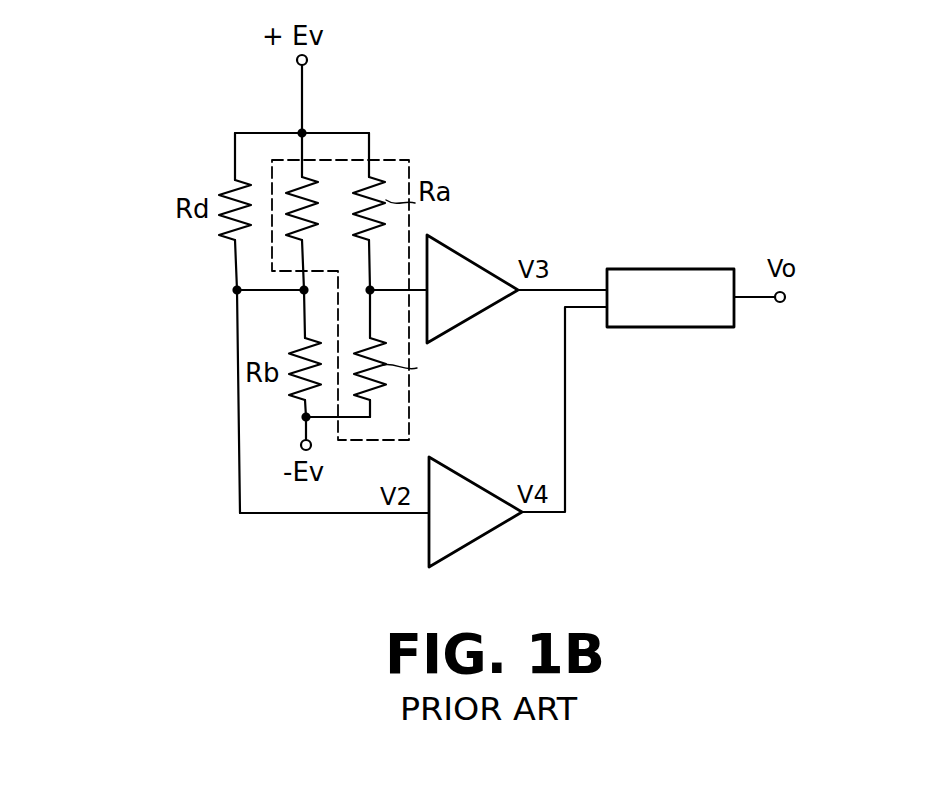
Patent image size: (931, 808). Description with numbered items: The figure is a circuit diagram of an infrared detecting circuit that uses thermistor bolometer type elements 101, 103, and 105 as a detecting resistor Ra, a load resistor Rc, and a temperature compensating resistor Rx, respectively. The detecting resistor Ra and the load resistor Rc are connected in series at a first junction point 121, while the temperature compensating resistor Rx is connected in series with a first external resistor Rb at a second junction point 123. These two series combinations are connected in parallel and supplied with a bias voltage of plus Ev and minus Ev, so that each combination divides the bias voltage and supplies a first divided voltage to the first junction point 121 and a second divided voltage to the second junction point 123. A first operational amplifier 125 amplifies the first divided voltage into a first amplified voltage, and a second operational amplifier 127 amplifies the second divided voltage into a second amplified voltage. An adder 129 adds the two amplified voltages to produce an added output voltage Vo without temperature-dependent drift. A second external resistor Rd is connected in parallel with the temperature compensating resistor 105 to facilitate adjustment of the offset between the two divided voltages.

The thermistor bolometer type element 101 is at (393, 172).
The thermistor bolometer type element 103 is at (403, 392).
The thermistor bolometer type element 105 is at (278, 183).
The first junction point 121 is at (363, 296).
The second junction point 123 is at (297, 286).
The first operational amplifier 125 is at (477, 258).
The second operational amplifier 127 is at (467, 478).
The adder 129 is at (675, 268).